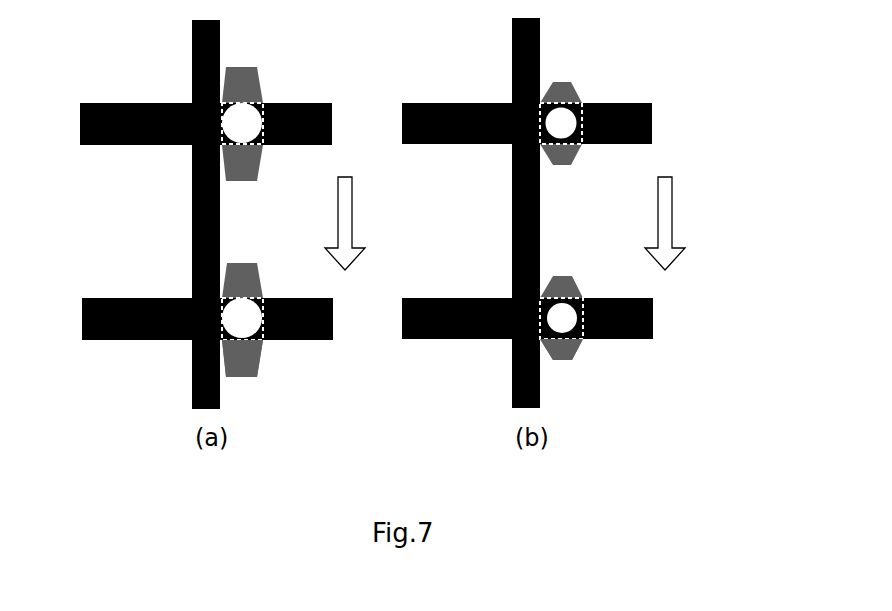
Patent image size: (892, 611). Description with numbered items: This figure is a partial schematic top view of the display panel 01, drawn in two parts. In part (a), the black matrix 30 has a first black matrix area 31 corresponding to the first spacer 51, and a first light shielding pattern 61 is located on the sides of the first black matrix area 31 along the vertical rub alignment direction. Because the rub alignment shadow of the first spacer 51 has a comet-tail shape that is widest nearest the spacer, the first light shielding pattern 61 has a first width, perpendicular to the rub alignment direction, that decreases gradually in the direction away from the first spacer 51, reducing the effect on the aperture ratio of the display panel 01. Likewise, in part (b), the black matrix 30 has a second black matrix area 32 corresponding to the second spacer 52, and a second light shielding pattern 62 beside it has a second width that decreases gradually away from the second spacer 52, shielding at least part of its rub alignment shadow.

The display panel 01 is at (74, 43).
The black matrix 30 is at (193, 194).
The first black matrix area 31 is at (263, 101).
The second black matrix area 32 is at (582, 102).
The first spacer 51 is at (238, 123).
The second spacer 52 is at (558, 124).
The first light shielding pattern 61 is at (243, 353).
The second light shielding pattern 62 is at (567, 357).